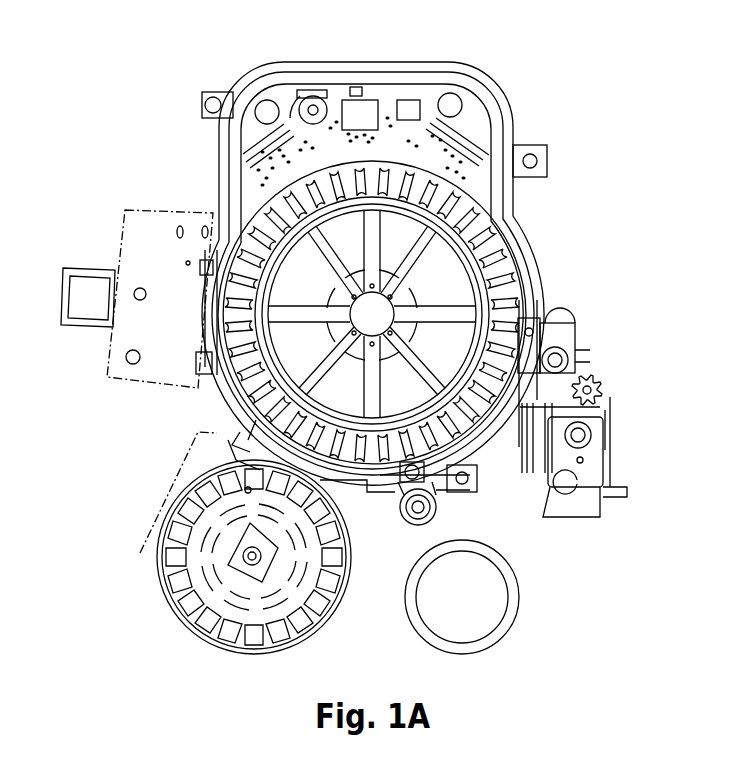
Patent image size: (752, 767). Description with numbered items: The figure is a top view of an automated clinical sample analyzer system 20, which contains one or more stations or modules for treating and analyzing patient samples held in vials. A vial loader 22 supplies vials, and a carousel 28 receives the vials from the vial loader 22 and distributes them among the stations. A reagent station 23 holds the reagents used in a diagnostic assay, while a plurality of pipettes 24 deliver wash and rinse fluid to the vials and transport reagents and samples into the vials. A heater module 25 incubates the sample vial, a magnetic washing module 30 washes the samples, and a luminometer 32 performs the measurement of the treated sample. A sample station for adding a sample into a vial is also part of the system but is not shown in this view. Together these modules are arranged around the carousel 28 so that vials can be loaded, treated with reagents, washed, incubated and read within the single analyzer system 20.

The automated clinical sample analyzer system 20 is at (135, 45).
The vial loader 22 is at (320, 612).
The reagent station 23 is at (515, 618).
The pipettes 24 is at (566, 505).
The heater module 25 is at (515, 111).
The carousel 28 is at (455, 298).
The magnetic washing module 30 is at (427, 137).
The luminometer 32 is at (150, 222).